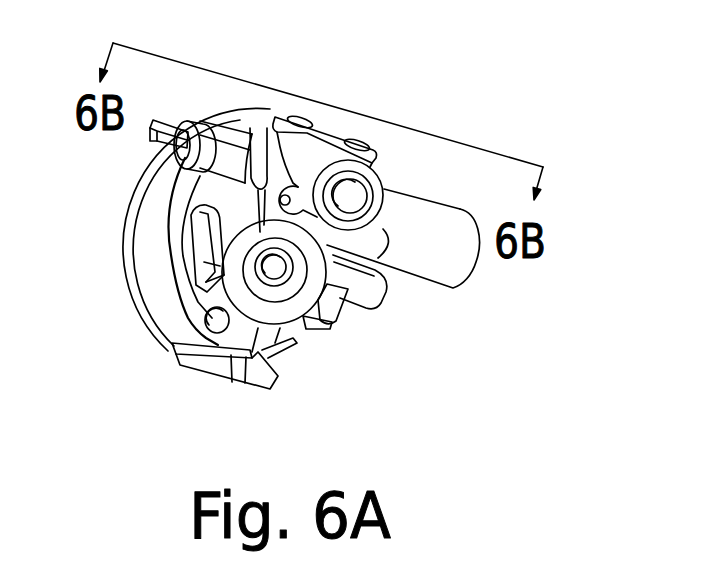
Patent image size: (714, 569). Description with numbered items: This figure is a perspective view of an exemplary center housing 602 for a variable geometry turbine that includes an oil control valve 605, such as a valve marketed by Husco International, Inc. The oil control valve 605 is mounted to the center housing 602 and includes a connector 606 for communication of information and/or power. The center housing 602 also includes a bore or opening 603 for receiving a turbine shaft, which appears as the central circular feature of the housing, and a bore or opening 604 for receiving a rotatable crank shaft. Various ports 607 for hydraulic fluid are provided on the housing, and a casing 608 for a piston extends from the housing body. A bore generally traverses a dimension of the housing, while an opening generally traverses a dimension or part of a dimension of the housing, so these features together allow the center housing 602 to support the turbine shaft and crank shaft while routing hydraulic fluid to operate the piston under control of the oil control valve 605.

The center housing 602 is at (458, 111).
The bore or opening 603 is at (275, 270).
The bore or opening 604 is at (374, 188).
The oil control valve 605 is at (186, 176).
The connector 606 is at (156, 144).
The ports 607 is at (367, 147).
The casing 608 is at (453, 288).